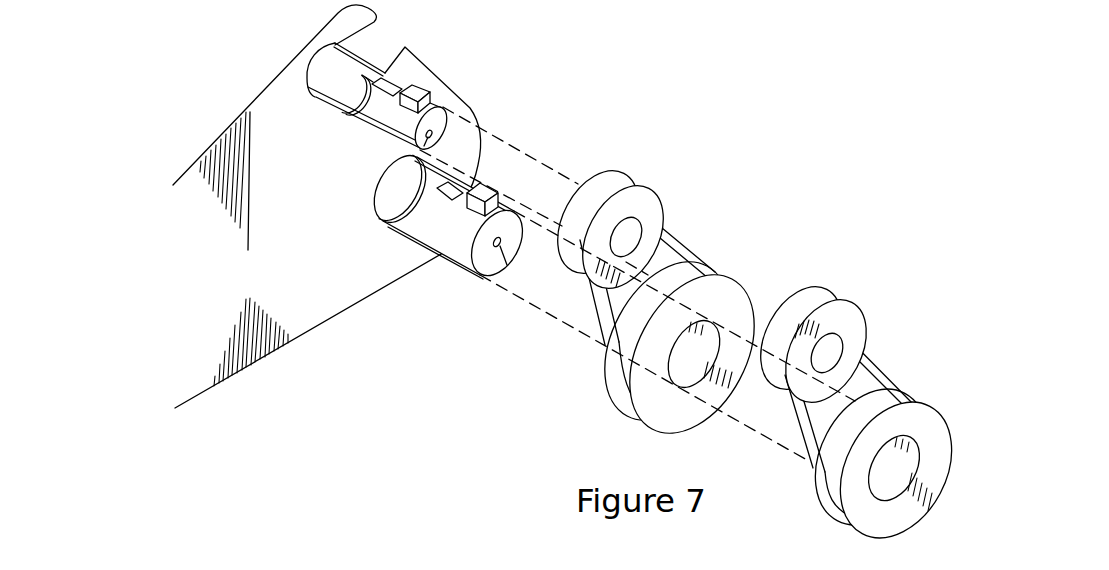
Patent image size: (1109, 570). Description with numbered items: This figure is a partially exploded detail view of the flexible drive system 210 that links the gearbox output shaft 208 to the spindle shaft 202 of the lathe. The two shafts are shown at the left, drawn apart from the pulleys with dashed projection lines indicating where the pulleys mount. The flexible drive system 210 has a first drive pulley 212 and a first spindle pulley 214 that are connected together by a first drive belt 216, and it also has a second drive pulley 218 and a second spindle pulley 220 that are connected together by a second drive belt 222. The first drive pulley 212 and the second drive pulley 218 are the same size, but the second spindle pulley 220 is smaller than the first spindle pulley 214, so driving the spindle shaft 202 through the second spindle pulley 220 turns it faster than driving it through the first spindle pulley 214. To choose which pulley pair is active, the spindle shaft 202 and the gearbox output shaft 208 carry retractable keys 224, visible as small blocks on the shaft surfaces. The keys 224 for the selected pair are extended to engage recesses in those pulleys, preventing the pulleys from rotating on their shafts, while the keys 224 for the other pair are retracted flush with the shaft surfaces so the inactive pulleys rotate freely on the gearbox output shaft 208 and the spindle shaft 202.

The spindle shaft 202 is at (453, 262).
The gearbox output shaft 208 is at (362, 119).
The flexible drive system 210 is at (773, 347).
The first drive pulley 212 is at (648, 198).
The first spindle pulley 214 is at (732, 292).
The first drive belt 216 is at (684, 250).
The second drive pulley 218 is at (853, 322).
The second spindle pulley 220 is at (930, 415).
The second drive belt 222 is at (877, 365).
The retractable keys 224 is at (421, 88).